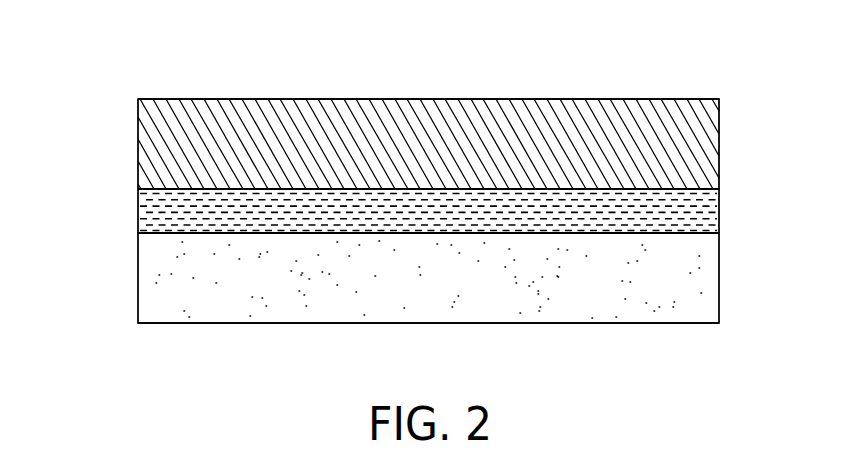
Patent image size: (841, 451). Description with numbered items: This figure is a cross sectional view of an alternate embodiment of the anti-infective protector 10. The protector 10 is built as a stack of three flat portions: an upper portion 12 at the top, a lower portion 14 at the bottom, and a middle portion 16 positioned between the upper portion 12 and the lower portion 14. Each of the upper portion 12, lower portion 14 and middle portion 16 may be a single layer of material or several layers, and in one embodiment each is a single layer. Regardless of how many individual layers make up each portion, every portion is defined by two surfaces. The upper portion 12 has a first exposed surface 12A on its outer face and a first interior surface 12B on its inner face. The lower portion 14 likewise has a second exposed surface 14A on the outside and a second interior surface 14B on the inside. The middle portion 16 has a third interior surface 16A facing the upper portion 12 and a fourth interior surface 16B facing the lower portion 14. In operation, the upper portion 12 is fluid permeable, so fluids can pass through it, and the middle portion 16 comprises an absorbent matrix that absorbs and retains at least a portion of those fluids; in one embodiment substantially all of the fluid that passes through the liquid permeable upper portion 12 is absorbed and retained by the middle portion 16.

The anti-infective protector 10 is at (693, 77).
The upper portion 12 is at (137, 128).
The first exposed surface 12A is at (146, 98).
The first interior surface 12B is at (146, 188).
The lower portion 14 is at (137, 293).
The second exposed surface 14A is at (161, 325).
The second interior surface 14B is at (161, 235).
The middle portion 16 is at (137, 216).
The third interior surface 16A is at (680, 189).
The fourth interior surface 16B is at (680, 234).